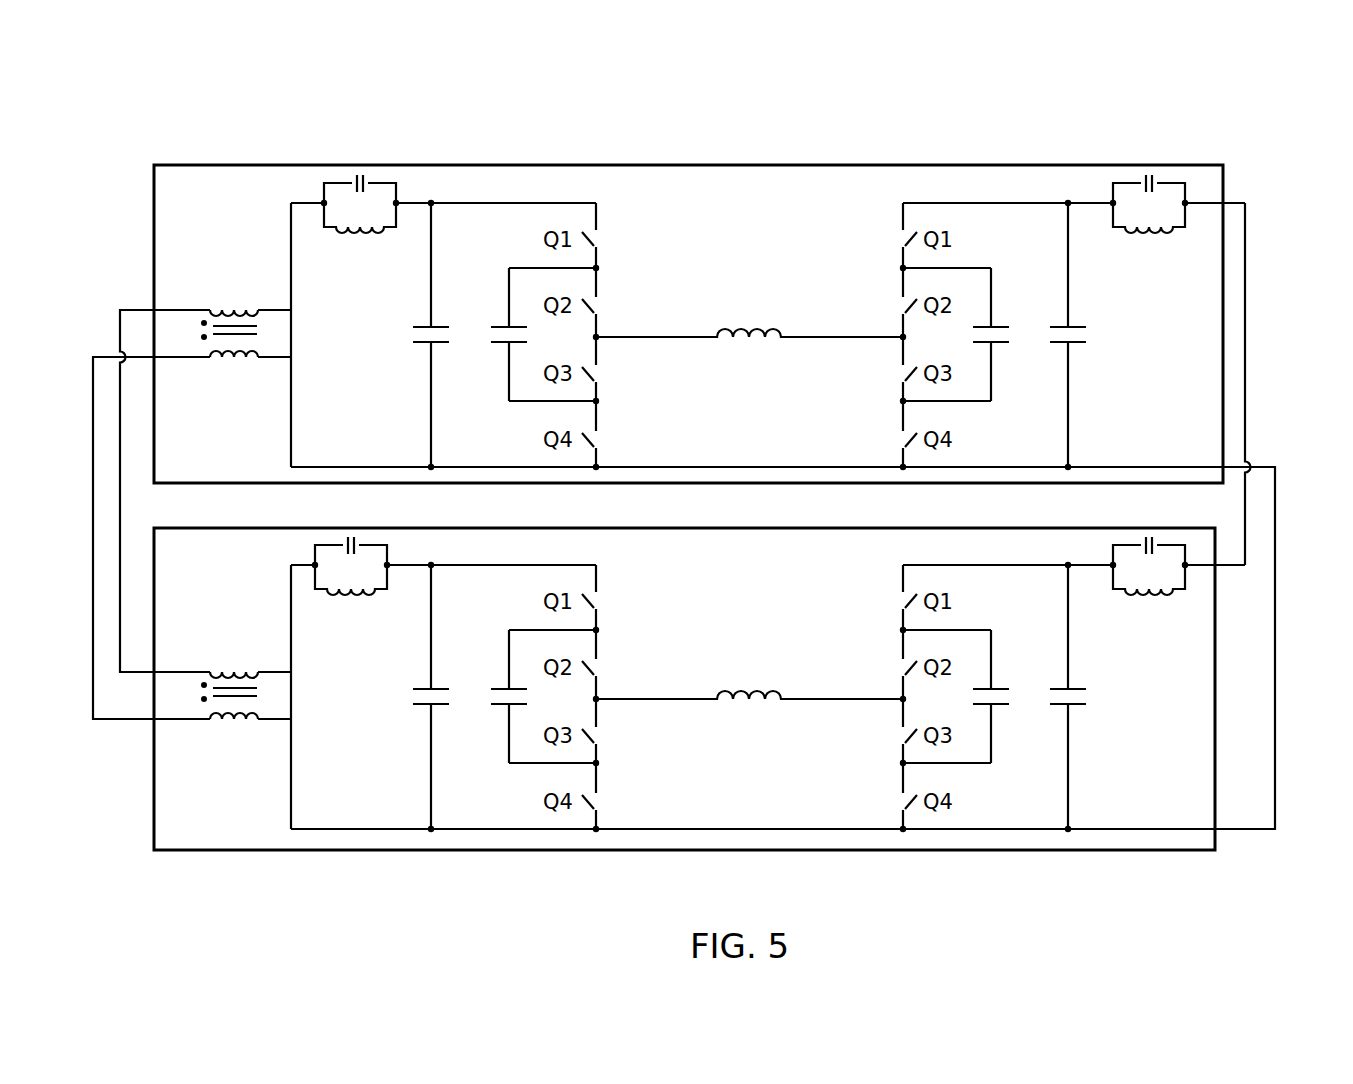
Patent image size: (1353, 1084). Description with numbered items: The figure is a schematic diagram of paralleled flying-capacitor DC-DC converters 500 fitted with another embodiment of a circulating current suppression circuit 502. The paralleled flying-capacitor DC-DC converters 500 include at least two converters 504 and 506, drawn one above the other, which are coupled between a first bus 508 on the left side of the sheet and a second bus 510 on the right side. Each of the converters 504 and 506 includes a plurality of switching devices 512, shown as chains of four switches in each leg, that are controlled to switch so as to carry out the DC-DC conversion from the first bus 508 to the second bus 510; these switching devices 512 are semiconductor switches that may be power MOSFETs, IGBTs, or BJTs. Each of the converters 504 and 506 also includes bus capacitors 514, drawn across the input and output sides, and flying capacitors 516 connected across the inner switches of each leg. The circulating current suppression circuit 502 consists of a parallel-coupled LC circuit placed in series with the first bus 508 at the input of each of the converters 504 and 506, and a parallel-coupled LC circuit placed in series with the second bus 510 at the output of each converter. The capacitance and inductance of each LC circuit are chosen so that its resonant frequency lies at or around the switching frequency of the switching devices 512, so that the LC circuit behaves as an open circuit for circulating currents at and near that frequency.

The paralleled flying-capacitor DC-DC converters 500 is at (279, 91).
The circulating current suppression circuit 502 is at (334, 178).
The converter 504 is at (773, 147).
The converter 506 is at (708, 859).
The first bus 508 is at (119, 681).
The second bus 510 is at (1248, 373).
The switching devices 512 is at (557, 211).
The bus capacitors 514 is at (412, 311).
The flying capacitors 516 is at (497, 313).